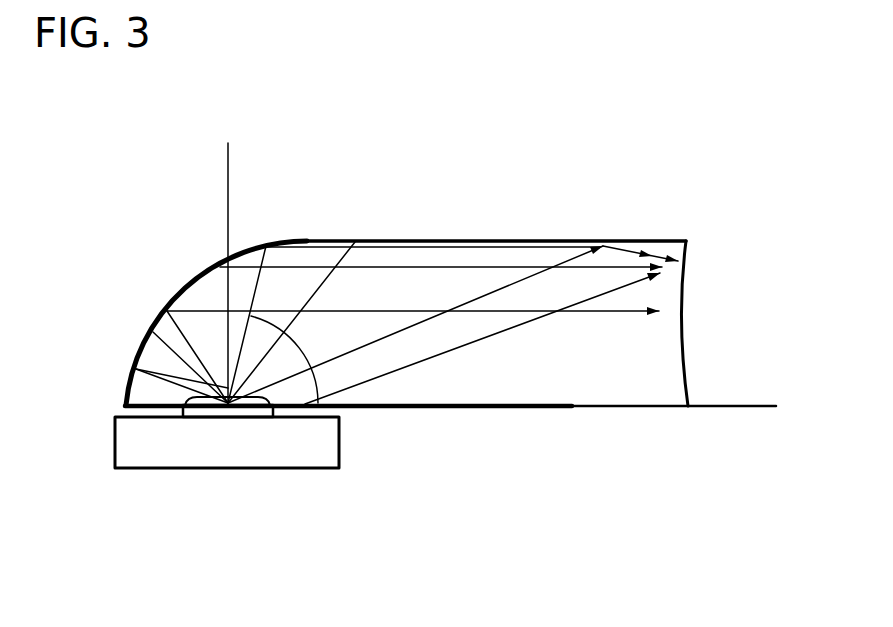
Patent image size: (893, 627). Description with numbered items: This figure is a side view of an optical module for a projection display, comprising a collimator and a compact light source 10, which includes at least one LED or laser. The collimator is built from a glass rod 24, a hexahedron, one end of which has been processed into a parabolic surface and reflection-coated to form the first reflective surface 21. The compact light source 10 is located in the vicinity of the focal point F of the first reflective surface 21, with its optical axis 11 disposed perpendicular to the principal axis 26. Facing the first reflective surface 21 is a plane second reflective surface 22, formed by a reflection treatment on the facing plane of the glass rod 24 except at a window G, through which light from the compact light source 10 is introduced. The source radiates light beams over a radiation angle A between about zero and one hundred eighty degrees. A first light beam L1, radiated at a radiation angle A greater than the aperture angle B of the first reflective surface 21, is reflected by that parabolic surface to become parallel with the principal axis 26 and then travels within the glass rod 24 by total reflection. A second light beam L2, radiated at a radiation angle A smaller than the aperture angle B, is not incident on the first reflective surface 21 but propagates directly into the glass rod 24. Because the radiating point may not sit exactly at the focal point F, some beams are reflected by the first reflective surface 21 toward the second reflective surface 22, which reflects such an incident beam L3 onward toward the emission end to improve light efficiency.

The compact light source 10 is at (203, 467).
The optical axis 11 is at (228, 160).
The first reflective surface 21 is at (252, 250).
The second reflective surface 22 is at (345, 408).
The glass rod 24 is at (468, 238).
The principal axis 26 is at (722, 408).
The focal point F is at (229, 407).
The window G is at (222, 392).
The radiation angle A is at (304, 352).
The aperture angle B is at (271, 352).
The first light beam L1 is at (630, 243).
The second light beam L2 is at (643, 243).
The incident beam L3 is at (625, 281).